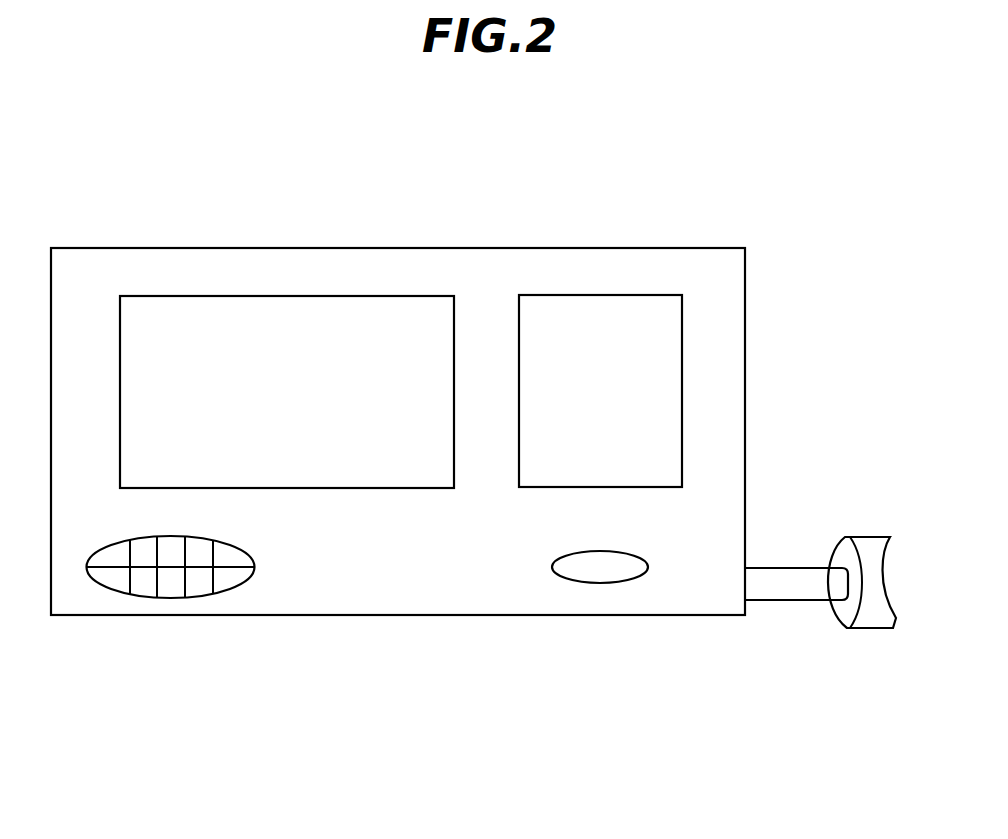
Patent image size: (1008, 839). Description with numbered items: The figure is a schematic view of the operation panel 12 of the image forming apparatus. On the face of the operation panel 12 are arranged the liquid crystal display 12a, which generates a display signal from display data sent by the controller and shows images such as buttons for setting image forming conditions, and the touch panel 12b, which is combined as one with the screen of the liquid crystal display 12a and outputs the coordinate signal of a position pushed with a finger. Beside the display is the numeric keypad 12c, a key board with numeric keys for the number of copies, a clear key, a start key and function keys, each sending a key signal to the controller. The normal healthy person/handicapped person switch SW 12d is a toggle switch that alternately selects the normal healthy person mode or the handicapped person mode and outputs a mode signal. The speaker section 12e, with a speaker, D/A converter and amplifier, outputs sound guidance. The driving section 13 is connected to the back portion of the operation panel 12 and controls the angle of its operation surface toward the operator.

The operation panel 12 is at (698, 247).
The liquid crystal display 12a is at (383, 297).
The touch panel 12b is at (247, 297).
The numeric keypad 12c is at (617, 295).
The normal healthy person/handicapped person switch SW 12d is at (580, 583).
The speaker section 12e is at (177, 598).
The driving section 13 is at (855, 630).